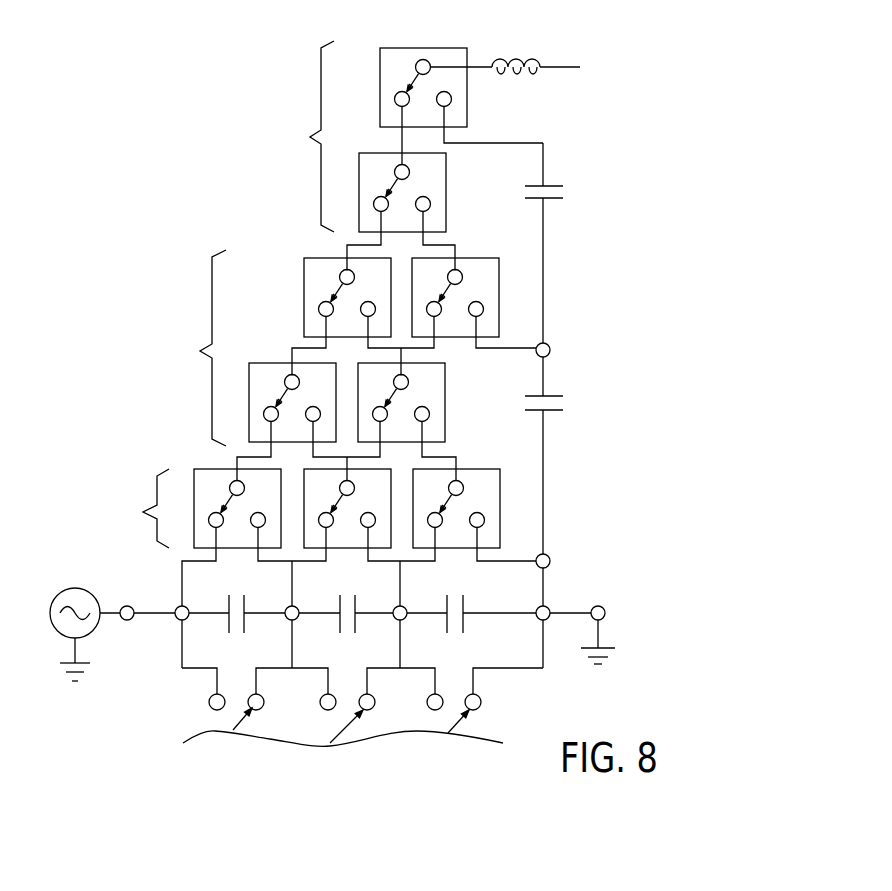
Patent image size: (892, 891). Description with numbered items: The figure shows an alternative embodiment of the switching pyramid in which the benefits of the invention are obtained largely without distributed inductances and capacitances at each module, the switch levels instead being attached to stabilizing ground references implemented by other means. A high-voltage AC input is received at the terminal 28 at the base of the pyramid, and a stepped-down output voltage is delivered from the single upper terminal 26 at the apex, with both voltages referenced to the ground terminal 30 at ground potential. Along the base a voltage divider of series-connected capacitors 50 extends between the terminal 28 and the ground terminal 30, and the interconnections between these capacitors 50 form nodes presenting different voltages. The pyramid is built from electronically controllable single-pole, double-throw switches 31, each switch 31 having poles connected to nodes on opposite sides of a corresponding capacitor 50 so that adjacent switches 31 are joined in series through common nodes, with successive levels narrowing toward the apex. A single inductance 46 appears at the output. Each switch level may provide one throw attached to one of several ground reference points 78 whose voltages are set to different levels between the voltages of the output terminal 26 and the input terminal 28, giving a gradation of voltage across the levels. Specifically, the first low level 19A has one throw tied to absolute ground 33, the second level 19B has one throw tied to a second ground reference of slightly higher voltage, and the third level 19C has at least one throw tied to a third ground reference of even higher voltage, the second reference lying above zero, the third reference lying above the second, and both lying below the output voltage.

The first low level 19A is at (319, 514).
The second level 19B is at (345, 329).
The third level 19C is at (404, 136).
The upper terminal 26 is at (425, 60).
The terminal 28 is at (127, 605).
The ground terminal 30 is at (600, 606).
The single-pole double-throw switch 31 is at (472, 97).
The absolute ground 33 is at (599, 634).
The inductance 46 is at (511, 52).
The capacitor 50 is at (553, 394).
The ground reference point 78 is at (604, 125).